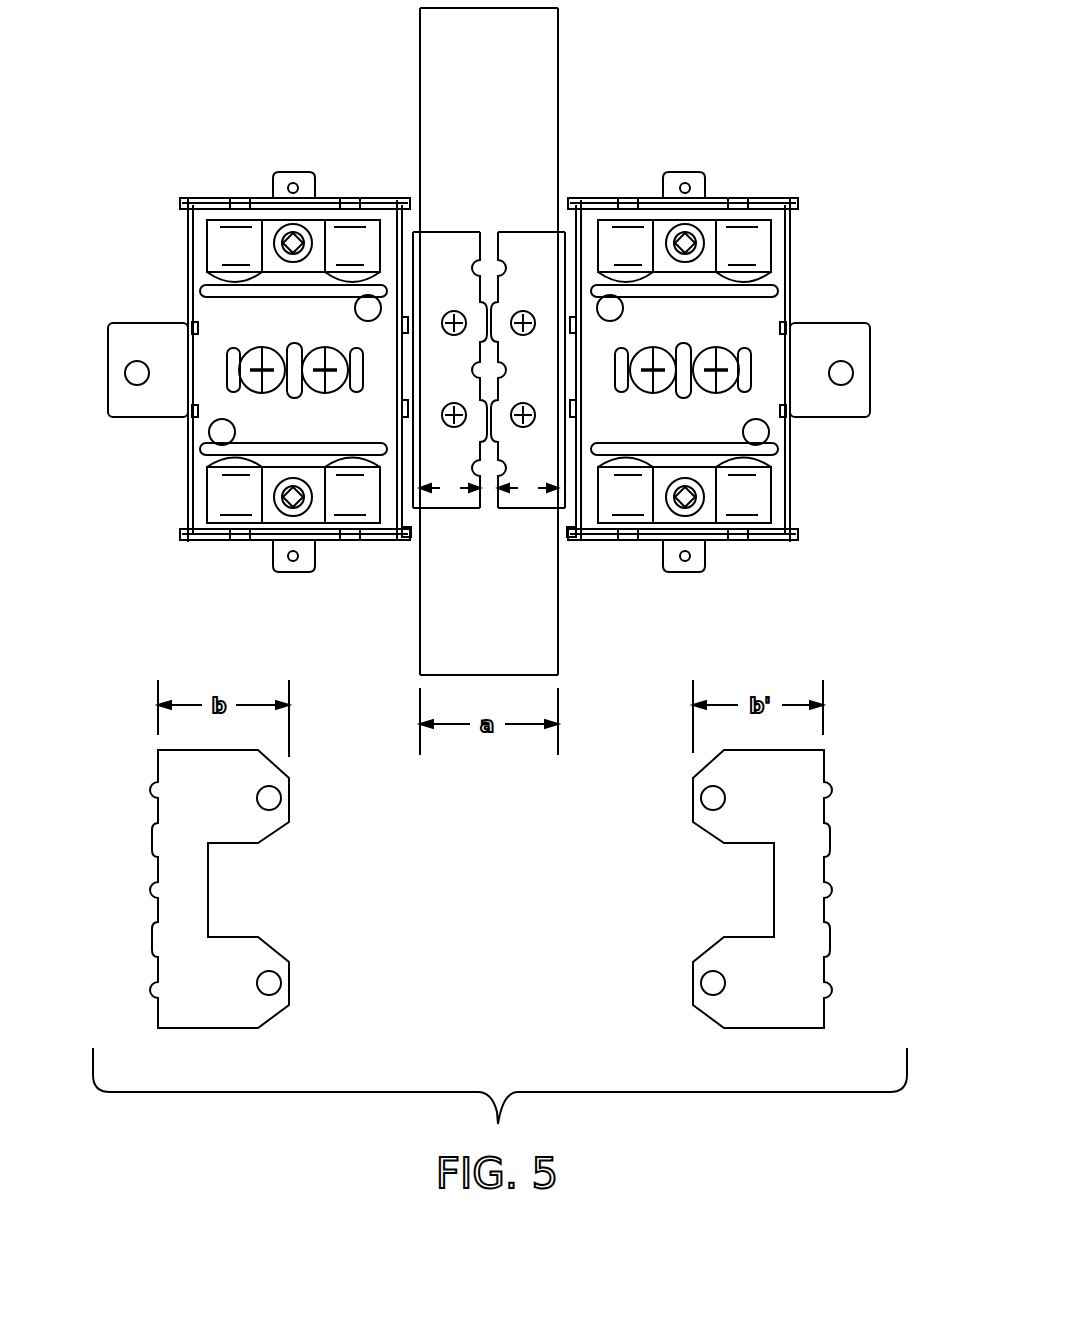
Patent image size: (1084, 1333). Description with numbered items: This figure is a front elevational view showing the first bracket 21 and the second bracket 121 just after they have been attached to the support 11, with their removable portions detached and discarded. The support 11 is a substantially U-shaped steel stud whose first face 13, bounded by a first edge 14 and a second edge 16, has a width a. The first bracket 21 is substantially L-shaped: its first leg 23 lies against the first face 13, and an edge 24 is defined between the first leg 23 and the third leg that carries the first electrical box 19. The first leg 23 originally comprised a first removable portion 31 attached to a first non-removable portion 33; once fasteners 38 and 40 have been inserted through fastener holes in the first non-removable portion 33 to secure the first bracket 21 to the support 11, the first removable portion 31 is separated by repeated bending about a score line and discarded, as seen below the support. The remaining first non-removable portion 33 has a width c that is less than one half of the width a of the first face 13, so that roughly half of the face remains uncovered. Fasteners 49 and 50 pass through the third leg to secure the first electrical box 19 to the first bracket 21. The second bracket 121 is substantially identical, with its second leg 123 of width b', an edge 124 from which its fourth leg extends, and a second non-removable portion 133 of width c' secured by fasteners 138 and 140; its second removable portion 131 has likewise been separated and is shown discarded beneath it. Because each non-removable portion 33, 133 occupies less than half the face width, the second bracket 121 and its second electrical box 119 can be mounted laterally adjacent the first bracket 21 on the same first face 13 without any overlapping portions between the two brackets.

The support 11 is at (479, 338).
The first face 13 is at (452, 70).
The first edge 14 is at (558, 62).
The second edge 16 is at (420, 42).
The first electrical box 19 is at (250, 372).
The second electrical box 119 is at (804, 480).
The first bracket 21 is at (435, 224).
The first leg 23 is at (471, 224).
The edge 24 is at (454, 356).
The first non-removable portion 33 is at (448, 520).
The fastener 38 is at (454, 427).
The fastener 40 is at (454, 311).
The fastener 49 is at (388, 440).
The fastener 50 is at (364, 320).
The second bracket 121 is at (511, 224).
The second leg 123 is at (536, 224).
The edge 124 is at (554, 369).
The second non-removable portion 133 is at (526, 520).
The fastener 138 is at (523, 427).
The fastener 140 is at (523, 311).
The first removable portion 31 is at (216, 1040).
The second removable portion 131 is at (766, 1040).